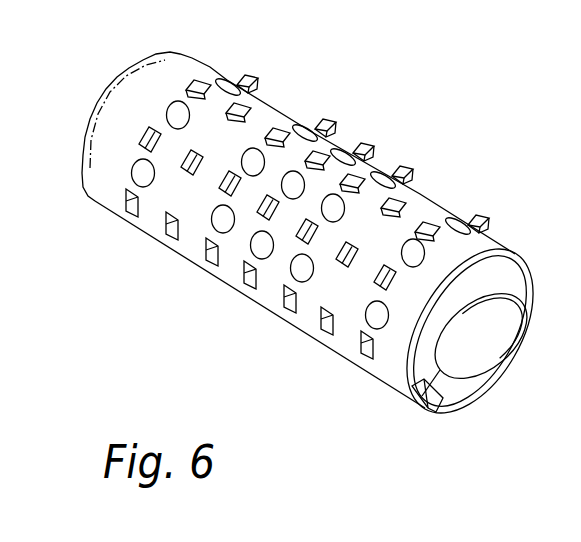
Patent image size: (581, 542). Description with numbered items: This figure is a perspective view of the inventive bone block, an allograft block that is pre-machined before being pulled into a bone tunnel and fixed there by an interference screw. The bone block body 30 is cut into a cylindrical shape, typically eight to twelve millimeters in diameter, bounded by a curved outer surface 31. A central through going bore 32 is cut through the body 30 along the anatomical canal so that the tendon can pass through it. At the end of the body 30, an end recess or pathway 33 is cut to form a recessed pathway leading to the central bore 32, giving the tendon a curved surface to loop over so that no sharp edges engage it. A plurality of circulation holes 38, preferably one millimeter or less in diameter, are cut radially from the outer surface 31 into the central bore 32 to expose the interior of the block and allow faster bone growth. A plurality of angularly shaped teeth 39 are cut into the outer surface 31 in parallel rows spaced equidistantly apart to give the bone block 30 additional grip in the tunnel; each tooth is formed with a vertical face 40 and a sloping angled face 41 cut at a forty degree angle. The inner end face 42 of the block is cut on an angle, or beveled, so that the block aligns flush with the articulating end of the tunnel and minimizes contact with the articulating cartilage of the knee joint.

The bone block body 30 is at (380, 130).
The curved outer surface 31 is at (185, 67).
The central through going bore 32 is at (492, 345).
The end recess or pathway 33 is at (430, 406).
The circulation holes 38 is at (252, 176).
The angularly shaped teeth 39 is at (323, 327).
The vertical face 40 is at (491, 230).
The sloping angled face 41 is at (470, 221).
The inner end face 42 is at (410, 384).